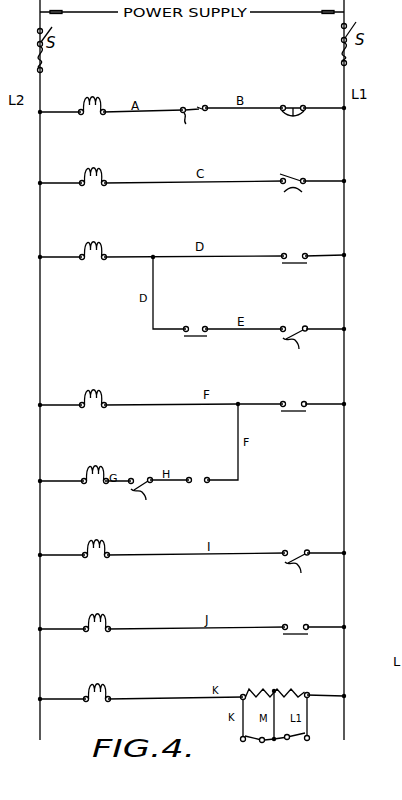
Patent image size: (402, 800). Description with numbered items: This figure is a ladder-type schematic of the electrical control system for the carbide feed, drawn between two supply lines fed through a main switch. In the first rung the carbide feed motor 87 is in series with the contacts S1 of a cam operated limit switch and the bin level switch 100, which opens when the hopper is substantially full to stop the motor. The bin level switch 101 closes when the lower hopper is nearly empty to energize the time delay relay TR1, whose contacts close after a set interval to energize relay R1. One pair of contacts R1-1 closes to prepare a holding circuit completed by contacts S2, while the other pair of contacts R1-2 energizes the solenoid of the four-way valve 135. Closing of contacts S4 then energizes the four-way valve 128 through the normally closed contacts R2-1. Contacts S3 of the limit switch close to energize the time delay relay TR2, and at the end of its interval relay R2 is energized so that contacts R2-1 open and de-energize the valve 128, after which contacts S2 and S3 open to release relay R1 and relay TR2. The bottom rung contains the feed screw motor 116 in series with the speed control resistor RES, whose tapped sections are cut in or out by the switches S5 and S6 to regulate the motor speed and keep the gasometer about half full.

The carbide feed motor 87 is at (92, 97).
The bin level switch 100 is at (295, 98).
The bin level switch 101 is at (295, 171).
The four-way valve 135 is at (92, 391).
The four-way valve 128 is at (93, 467).
The feed screw motor 116 is at (98, 685).
The contacts of cam operated limit switch S1 is at (193, 103).
The contacts S2 is at (292, 325).
The contacts of limit switch S3 is at (294, 549).
The contacts of limit switch S4 is at (141, 476).
The switch S5 is at (256, 748).
The switch S6 is at (292, 746).
The time delay relay TR1 is at (193, 208).
The time delay relay TR2 is at (193, 580).
The relay R1 is at (93, 243).
The relay R2 is at (97, 615).
The contacts of relay R1 R1-1 is at (191, 322).
The contacts of relay R1 R1-2 is at (292, 393).
The normally closed contacts of relay R2 R2-1 is at (196, 468).
The speed control resistor RES is at (275, 681).